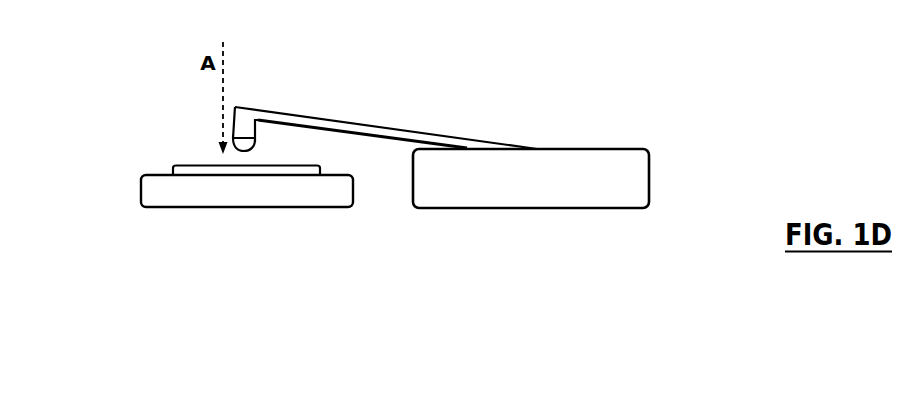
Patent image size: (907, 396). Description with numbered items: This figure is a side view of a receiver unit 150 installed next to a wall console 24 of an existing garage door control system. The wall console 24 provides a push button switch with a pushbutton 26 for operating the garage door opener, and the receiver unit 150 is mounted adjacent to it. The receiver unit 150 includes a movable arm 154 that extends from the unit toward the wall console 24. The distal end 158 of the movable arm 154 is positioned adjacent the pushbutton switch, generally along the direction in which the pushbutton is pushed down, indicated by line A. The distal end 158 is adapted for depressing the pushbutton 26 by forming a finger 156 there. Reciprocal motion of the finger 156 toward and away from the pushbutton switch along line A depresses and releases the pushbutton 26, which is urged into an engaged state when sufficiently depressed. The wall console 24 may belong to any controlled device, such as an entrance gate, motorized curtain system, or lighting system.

The wall console 24 is at (163, 208).
The pushbutton 26 is at (180, 162).
The receiver unit 150 is at (547, 208).
The movable arm 154 is at (365, 122).
The finger 156 is at (252, 127).
The distal end 158 is at (257, 95).